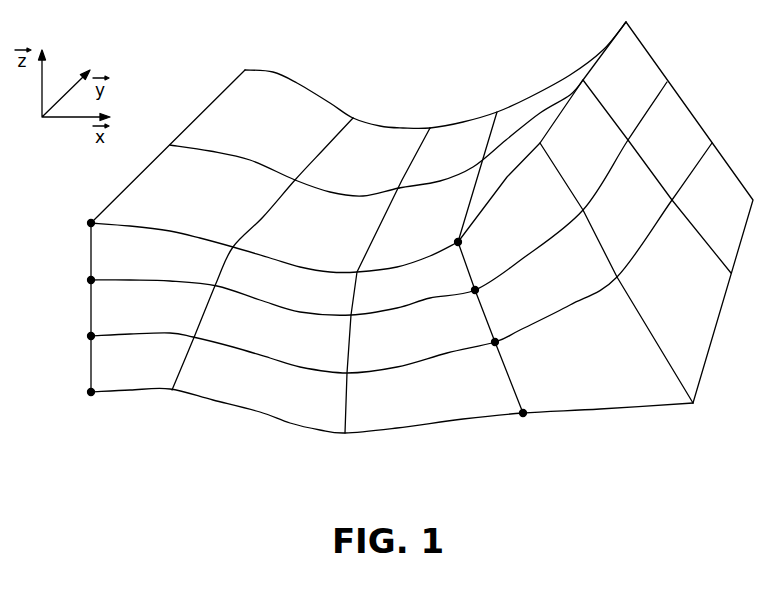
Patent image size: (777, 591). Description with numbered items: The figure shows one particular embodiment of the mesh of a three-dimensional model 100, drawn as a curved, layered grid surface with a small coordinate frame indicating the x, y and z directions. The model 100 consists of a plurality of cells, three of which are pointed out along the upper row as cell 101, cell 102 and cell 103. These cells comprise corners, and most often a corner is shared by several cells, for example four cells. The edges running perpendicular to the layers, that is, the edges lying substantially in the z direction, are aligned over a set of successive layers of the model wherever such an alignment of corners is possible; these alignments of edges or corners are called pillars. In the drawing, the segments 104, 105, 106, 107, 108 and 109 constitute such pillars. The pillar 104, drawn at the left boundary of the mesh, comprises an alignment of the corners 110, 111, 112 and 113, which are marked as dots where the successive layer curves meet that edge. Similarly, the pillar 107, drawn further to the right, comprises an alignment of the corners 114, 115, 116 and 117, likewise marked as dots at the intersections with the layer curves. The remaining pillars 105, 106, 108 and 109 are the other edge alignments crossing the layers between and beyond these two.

The model 100 is at (258, 439).
The cell 101 is at (302, 102).
The cell 102 is at (381, 144).
The cell 103 is at (460, 140).
The pillar 104 is at (89, 296).
The pillar 105 is at (177, 367).
The pillar 106 is at (345, 418).
The pillar 107 is at (515, 392).
The pillar 108 is at (679, 382).
The pillar 109 is at (705, 245).
The corner 110 is at (91, 223).
The corner 111 is at (91, 280).
The corner 112 is at (91, 336).
The corner 113 is at (91, 392).
The corner 114 is at (460, 243).
The corner 115 is at (477, 291).
The corner 116 is at (497, 343).
The corner 117 is at (523, 413).